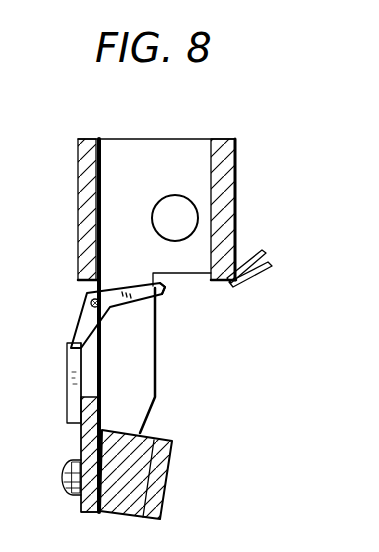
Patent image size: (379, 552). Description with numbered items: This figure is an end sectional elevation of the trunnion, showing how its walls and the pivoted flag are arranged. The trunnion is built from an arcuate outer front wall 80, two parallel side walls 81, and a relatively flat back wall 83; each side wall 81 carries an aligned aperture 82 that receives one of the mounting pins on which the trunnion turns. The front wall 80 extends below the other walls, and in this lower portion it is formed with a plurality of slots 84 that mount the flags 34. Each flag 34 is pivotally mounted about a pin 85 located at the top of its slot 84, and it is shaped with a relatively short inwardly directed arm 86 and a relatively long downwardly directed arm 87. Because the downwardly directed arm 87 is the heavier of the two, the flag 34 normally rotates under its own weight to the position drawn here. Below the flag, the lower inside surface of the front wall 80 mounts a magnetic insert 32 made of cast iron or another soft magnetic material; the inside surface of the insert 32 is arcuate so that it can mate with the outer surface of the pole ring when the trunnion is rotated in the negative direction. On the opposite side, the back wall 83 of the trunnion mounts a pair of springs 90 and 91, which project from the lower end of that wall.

The side wall 81 is at (148, 155).
The front wall 80 is at (88, 192).
The back wall 83 is at (233, 171).
The aperture 82 is at (155, 231).
The pin 85 is at (92, 300).
The flag 34 is at (74, 314).
The inwardly directed arm 86 is at (164, 296).
The slot 84 is at (100, 364).
The downwardly directed arm 87 is at (78, 386).
The magnetic insert 32 is at (138, 460).
The spring 90 is at (250, 260).
The spring 91 is at (253, 275).